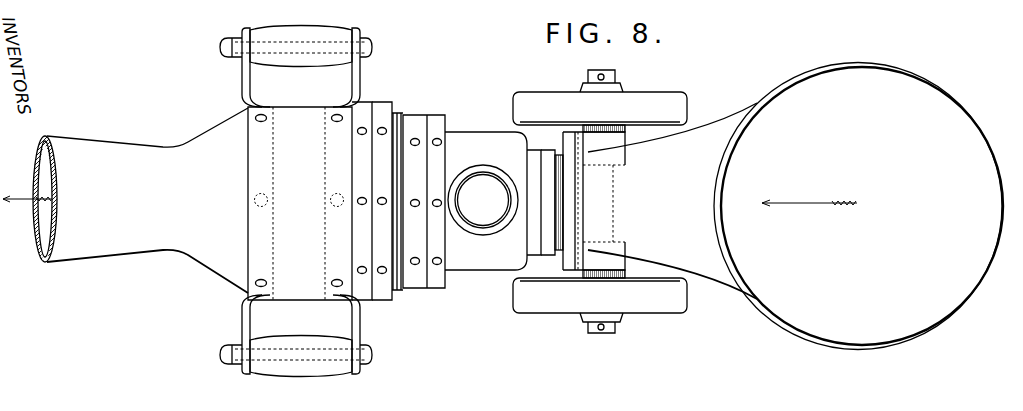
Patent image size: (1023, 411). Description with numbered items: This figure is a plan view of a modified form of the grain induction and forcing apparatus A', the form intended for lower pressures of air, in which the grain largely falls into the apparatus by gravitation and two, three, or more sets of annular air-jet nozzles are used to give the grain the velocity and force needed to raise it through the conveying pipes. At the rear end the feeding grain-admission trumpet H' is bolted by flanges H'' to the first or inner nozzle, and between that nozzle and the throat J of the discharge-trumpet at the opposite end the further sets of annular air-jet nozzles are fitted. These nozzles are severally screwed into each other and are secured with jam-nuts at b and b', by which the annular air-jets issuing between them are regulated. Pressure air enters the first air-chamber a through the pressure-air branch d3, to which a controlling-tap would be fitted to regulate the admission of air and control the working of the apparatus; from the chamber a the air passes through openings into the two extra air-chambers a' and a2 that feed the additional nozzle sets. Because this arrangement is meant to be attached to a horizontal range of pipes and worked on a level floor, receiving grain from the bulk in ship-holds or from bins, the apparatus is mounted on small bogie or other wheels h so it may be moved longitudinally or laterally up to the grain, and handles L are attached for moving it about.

The throat of the discharge-trumpet J is at (125, 200).
The handles L is at (296, 201).
The extra air-chamber a2 is at (300, 203).
The jam-nut b is at (446, 201).
The jam-nut b' is at (467, 201).
The extra air-chamber a' is at (398, 193).
The grain induction and forcing apparatus A' is at (435, 179).
The first air-chamber a is at (486, 201).
The pressure-air branch d3 is at (483, 200).
The flanges H'' is at (594, 201).
The bogie wheels h is at (600, 201).
The feeding grain-admission trumpet H' is at (795, 206).